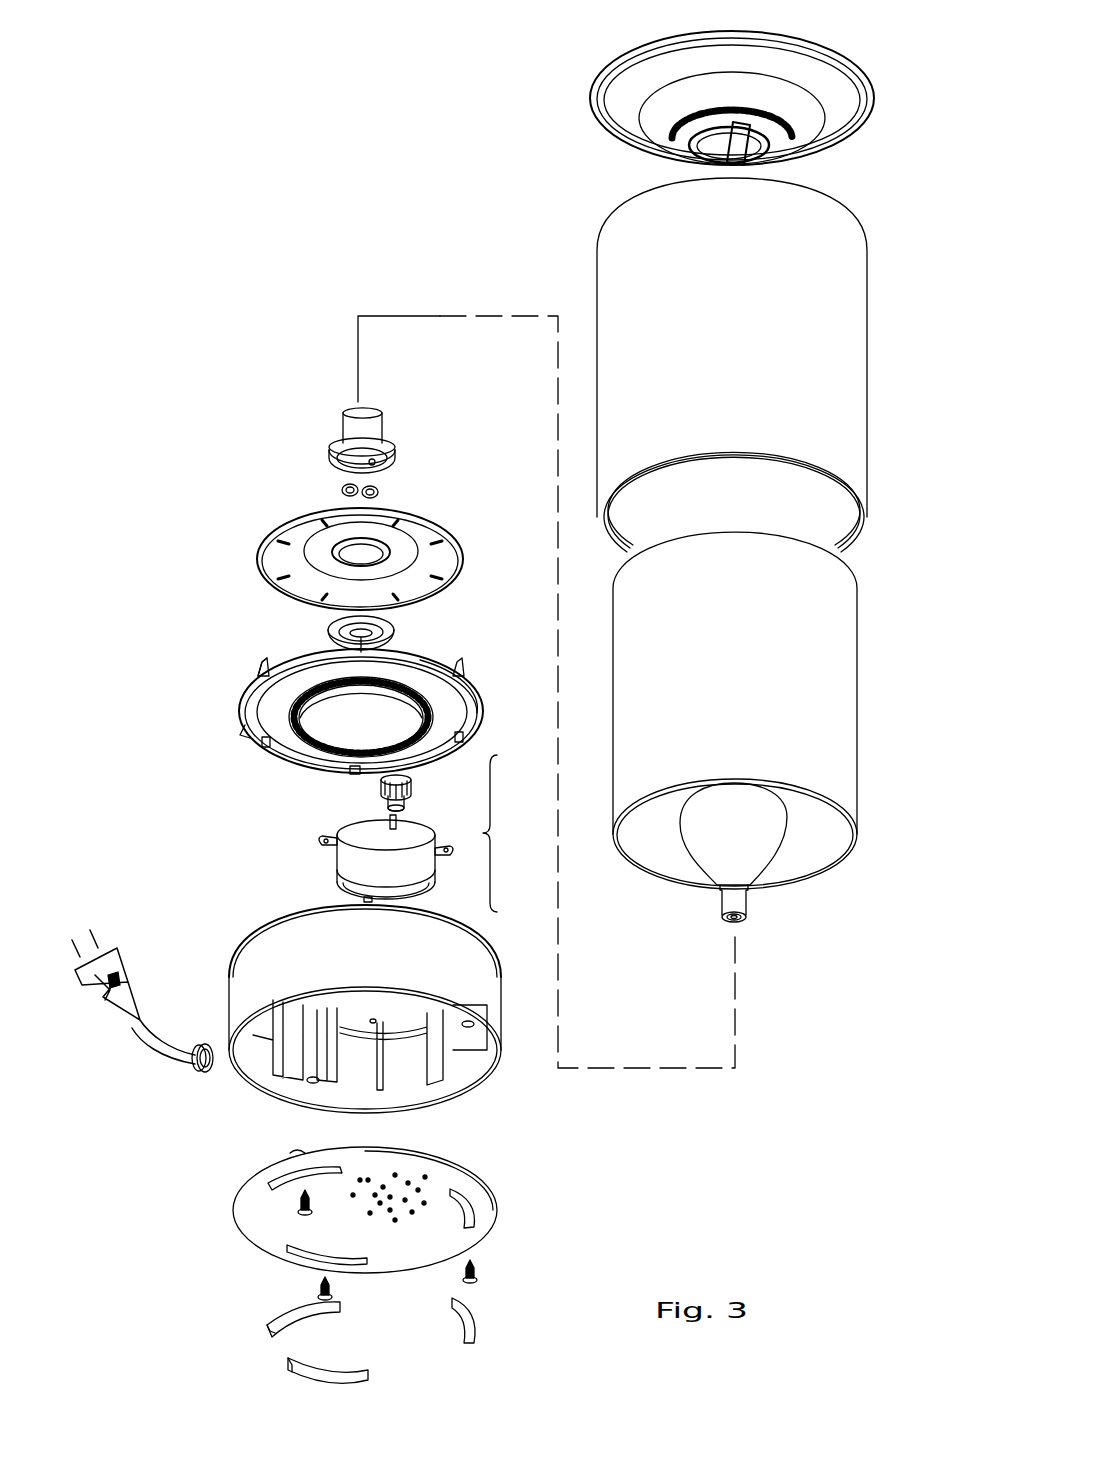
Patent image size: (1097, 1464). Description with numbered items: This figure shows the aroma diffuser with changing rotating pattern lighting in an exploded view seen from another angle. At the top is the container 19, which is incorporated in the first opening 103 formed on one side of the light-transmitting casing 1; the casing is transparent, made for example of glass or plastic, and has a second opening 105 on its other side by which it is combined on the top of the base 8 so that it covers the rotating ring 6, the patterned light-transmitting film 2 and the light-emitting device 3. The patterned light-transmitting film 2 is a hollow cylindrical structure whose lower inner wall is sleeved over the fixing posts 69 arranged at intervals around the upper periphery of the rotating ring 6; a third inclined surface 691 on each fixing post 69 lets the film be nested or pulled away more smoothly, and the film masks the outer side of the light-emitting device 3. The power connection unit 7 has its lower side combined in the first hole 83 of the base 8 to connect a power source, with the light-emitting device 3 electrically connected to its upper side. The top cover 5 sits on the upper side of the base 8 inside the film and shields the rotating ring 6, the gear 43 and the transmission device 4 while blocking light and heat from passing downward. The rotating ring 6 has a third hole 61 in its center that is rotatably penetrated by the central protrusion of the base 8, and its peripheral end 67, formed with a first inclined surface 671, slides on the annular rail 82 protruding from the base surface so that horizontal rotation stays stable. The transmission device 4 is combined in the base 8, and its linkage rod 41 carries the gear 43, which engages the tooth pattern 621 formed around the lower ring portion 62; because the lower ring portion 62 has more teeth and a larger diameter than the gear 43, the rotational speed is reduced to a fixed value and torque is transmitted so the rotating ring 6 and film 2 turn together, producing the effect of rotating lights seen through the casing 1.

The container 19 is at (632, 55).
The first opening 103 is at (615, 190).
The light-transmitting casing 1 is at (837, 340).
The second opening 105 is at (841, 518).
The patterned light-transmitting film 2 is at (827, 732).
The light-emitting device 3 is at (756, 848).
The power connection unit 7 is at (342, 432).
The top cover 5 is at (308, 520).
The rotating ring 6 is at (308, 705).
The fixing posts 69 is at (258, 670).
The third inclined surface 691 is at (262, 660).
The peripheral end 67 is at (470, 690).
The lower ring portion 62 is at (281, 748).
The tooth pattern 621 is at (290, 705).
The third hole 61 is at (365, 712).
The first inclined surface 671 is at (230, 735).
The transmission device 4 is at (425, 833).
The gear 43 is at (413, 782).
The linkage rod 41 is at (400, 817).
The base 8 is at (286, 1020).
The annular rail 82 is at (300, 925).
The first hole 83 is at (361, 1011).